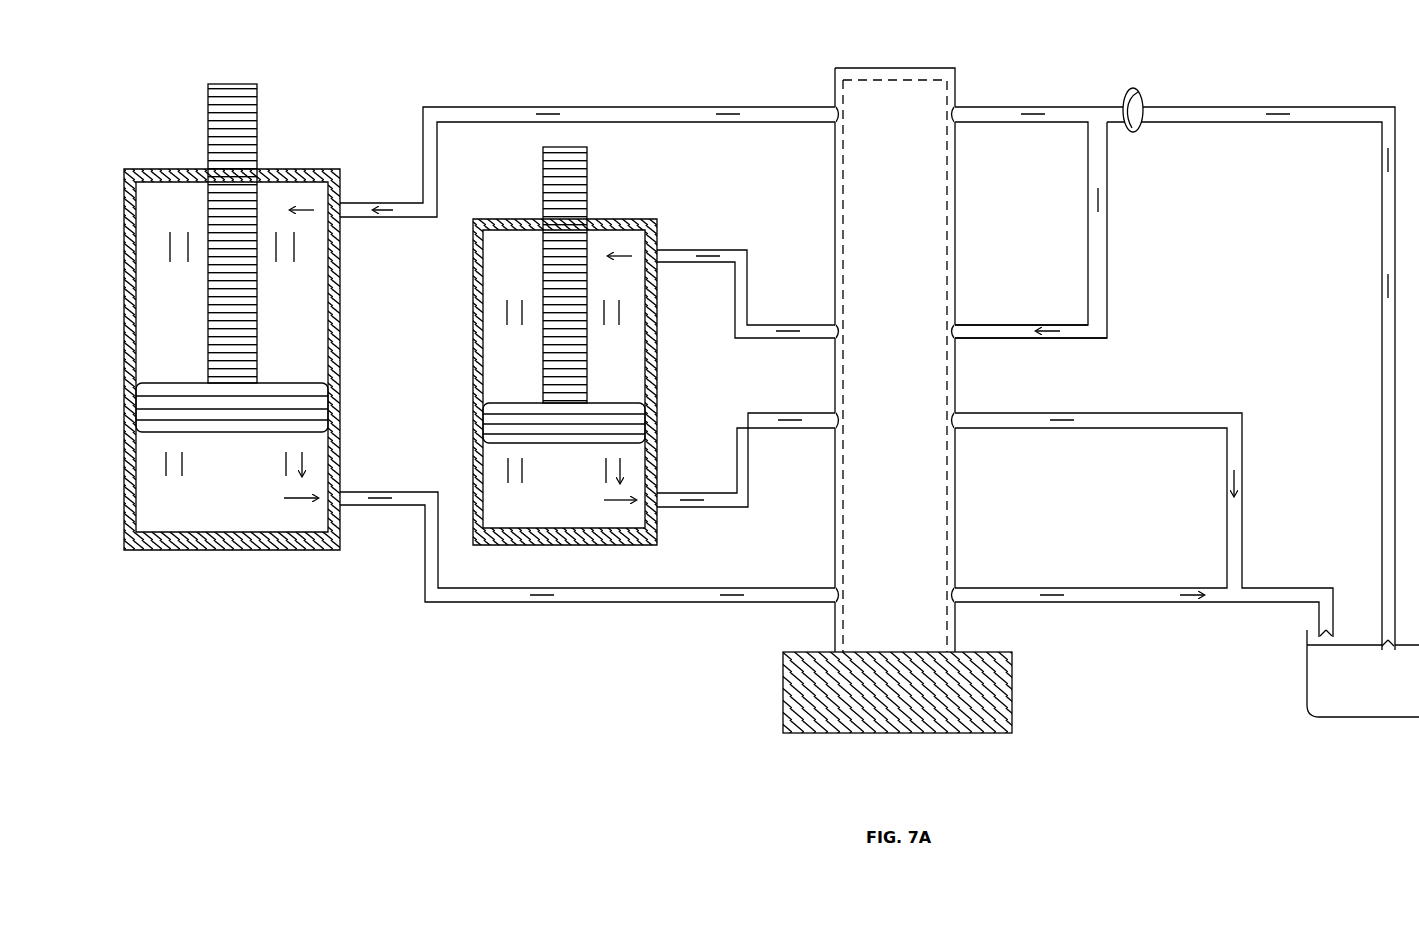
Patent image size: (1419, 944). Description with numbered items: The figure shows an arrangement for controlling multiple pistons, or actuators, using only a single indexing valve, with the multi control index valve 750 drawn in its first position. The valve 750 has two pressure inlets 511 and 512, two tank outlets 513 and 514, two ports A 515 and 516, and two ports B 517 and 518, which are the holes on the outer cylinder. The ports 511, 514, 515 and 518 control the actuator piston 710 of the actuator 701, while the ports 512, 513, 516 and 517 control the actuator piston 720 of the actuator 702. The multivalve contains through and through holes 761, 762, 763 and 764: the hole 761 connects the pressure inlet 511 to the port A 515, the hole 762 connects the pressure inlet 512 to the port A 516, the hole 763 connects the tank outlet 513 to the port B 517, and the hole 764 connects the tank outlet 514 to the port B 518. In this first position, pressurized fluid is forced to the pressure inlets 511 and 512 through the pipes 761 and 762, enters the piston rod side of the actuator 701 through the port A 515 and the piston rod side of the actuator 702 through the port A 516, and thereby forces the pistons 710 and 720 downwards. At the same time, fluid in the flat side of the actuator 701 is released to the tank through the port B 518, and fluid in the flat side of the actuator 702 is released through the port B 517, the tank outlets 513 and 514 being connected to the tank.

The actuator 701 is at (258, 565).
The actuator 702 is at (466, 347).
The actuator piston 710 is at (257, 135).
The actuator piston 720 is at (587, 183).
The valve 750 is at (822, 748).
The pressure inlet 511 is at (954, 106).
The pressure inlet 512 is at (954, 325).
The tank outlet 513 is at (954, 413).
The tank outlet 514 is at (954, 588).
The port A 515 is at (836, 106).
The port A 516 is at (836, 325).
The port B 517 is at (836, 413).
The port B 518 is at (836, 588).
The through and through hole 761 is at (888, 112).
The through and through hole 762 is at (888, 332).
The through and through hole 763 is at (888, 422).
The through and through hole 764 is at (888, 599).